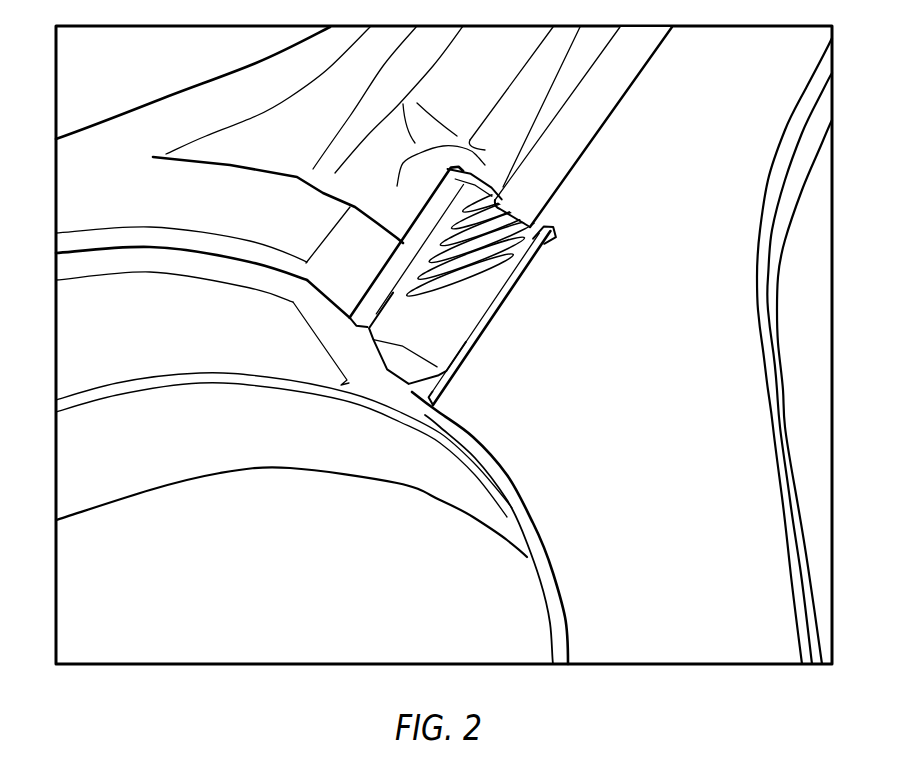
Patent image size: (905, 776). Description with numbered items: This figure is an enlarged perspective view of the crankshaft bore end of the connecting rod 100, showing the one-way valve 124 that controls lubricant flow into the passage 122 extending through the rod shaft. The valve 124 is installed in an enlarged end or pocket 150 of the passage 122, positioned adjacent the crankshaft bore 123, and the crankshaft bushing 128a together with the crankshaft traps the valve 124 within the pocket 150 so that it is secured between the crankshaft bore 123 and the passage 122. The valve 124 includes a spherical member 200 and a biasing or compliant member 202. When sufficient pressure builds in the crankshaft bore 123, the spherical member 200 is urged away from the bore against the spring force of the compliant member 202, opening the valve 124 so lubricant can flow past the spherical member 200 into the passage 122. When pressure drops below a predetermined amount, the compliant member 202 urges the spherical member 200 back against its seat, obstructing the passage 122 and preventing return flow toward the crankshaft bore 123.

The connecting rod 100 is at (168, 116).
The passage 122 is at (598, 103).
The crankshaft bore 123 is at (305, 397).
The valve 124 is at (533, 323).
The bushing 128a is at (208, 450).
The pocket 150 is at (398, 230).
The spherical member 200 is at (412, 345).
The compliant member 202 is at (508, 263).